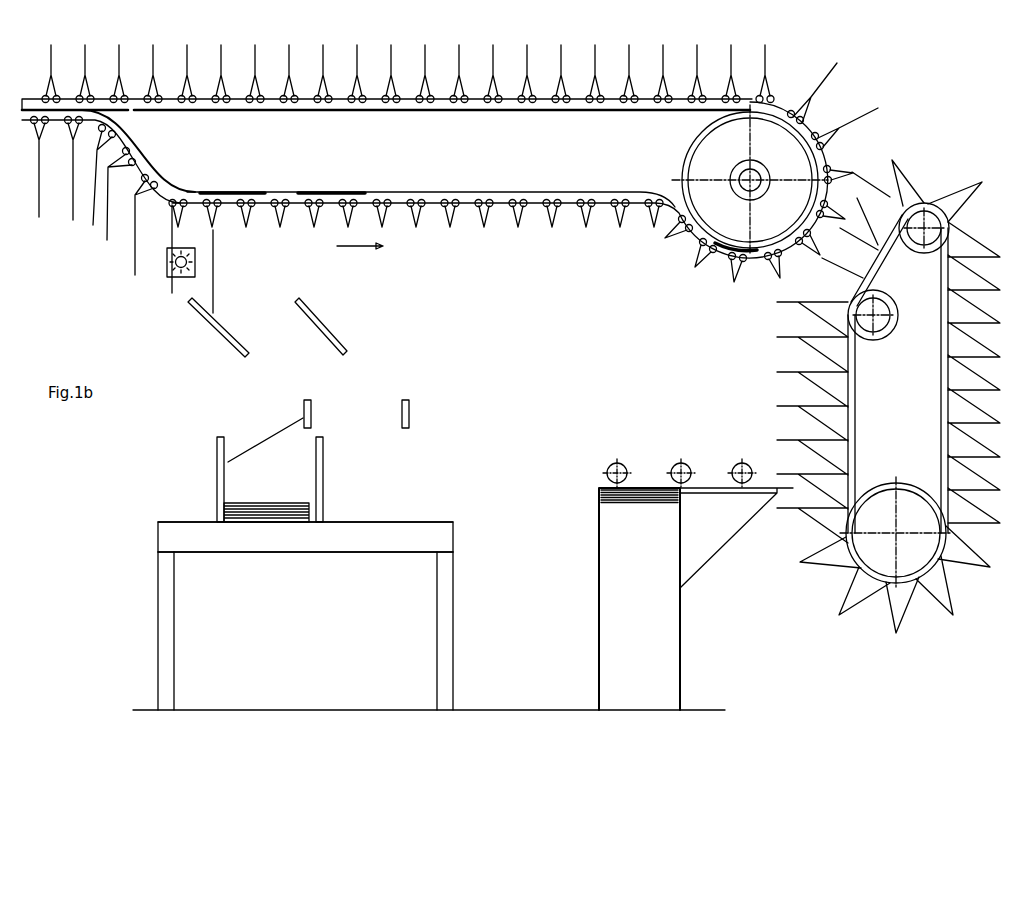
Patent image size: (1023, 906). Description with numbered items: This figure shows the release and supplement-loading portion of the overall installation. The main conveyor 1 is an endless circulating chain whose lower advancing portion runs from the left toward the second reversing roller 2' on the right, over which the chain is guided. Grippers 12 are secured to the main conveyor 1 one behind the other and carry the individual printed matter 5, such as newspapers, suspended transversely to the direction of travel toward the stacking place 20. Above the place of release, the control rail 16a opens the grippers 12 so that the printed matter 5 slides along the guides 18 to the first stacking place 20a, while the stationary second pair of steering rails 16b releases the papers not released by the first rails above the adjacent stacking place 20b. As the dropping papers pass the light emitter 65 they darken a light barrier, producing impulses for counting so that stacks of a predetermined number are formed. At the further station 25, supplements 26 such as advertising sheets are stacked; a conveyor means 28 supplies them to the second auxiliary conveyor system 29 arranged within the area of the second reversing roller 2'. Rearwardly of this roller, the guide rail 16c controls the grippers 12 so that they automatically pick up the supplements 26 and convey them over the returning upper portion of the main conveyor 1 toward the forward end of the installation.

The main conveyor 1 is at (567, 192).
The second reversing roller 2' is at (738, 180).
The printed matter 5 is at (213, 258).
The grippers 12 is at (492, 230).
The control rail 16a is at (230, 192).
The second pair of steering rails 16b is at (320, 192).
The guide rail 16c is at (783, 238).
The guides 18 is at (298, 318).
The stacking place 20 is at (160, 642).
The first stacking place 20a is at (270, 552).
The stacking place 20b is at (373, 522).
The further station 25 is at (617, 617).
The supplements 26 is at (600, 490).
The conveyor means 28 is at (675, 463).
The second auxiliary conveyor system 29 is at (858, 407).
The light emitter 65 is at (167, 268).